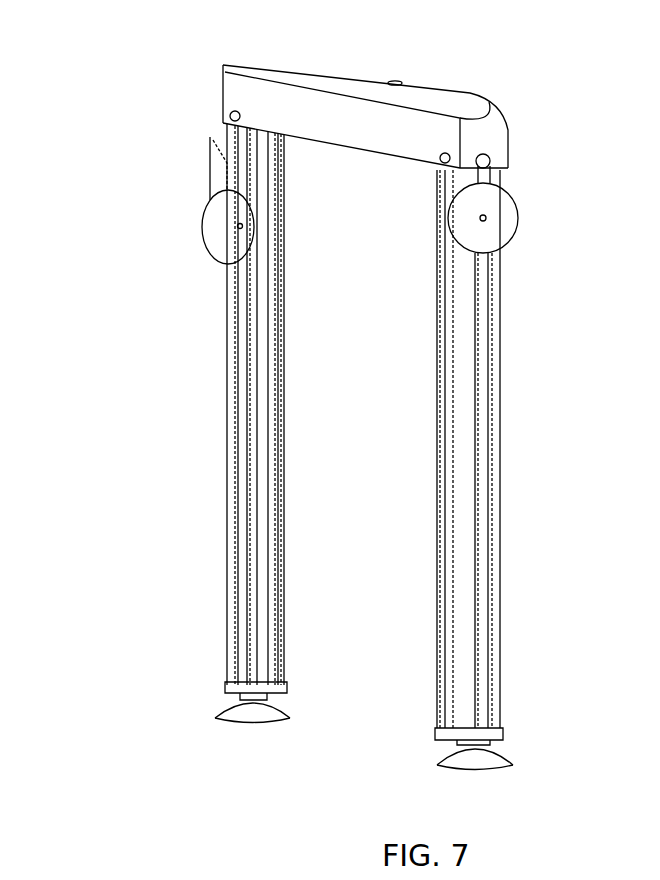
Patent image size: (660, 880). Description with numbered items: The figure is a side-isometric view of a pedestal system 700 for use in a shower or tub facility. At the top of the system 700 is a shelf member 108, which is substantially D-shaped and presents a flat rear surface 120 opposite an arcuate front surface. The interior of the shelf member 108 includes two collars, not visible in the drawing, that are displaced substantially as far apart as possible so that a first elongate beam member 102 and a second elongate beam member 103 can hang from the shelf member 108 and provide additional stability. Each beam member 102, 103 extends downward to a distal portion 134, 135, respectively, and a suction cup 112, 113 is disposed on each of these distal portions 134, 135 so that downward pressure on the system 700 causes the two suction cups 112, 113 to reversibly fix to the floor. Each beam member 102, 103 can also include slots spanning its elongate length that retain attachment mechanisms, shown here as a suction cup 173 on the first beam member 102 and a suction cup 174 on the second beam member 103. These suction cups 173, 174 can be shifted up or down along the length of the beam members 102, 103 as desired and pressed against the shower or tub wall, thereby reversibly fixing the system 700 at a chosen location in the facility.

The pedestal system 700 is at (97, 36).
The shelf member 108 is at (504, 100).
The flat rear surface 120 is at (362, 134).
The second elongate beam member 103 is at (285, 415).
The first elongate beam member 102 is at (500, 420).
The suction cup 174 is at (203, 243).
The suction cup 173 is at (518, 215).
The distal portion 135 is at (333, 650).
The distal portion 134 is at (527, 736).
The suction cup 113 is at (288, 722).
The suction cup 112 is at (512, 763).